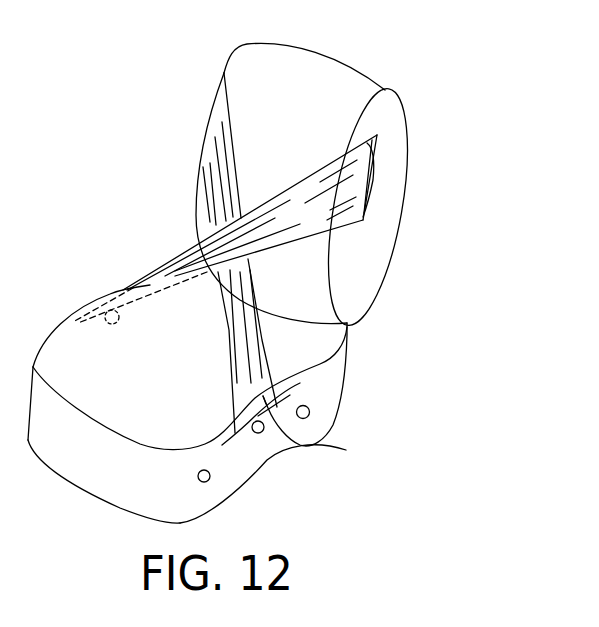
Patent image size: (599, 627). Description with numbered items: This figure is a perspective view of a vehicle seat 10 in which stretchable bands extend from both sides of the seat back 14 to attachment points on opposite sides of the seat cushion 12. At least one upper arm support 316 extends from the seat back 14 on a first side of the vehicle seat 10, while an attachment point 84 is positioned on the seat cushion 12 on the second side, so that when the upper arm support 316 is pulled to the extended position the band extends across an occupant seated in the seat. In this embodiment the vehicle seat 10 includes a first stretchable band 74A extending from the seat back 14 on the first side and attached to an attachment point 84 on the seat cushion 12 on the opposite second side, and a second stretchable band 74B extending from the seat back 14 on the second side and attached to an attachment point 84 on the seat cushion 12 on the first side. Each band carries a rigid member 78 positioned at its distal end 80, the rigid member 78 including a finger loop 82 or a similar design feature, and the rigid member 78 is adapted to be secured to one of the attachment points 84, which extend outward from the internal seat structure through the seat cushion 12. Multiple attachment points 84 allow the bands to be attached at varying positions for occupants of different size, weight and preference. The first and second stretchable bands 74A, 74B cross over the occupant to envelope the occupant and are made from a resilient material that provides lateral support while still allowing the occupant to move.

The vehicle seat 10 is at (242, 70).
The seat cushion 12 is at (184, 371).
The seat back 14 is at (293, 142).
The first stretchable band 74A is at (307, 233).
The second stretchable band 74B is at (216, 194).
The rigid member 78 is at (276, 481).
The distal end 80 is at (300, 383).
The finger loop 82 is at (268, 415).
The attachment point 84 is at (310, 410).
The upper arm support 316 is at (322, 152).